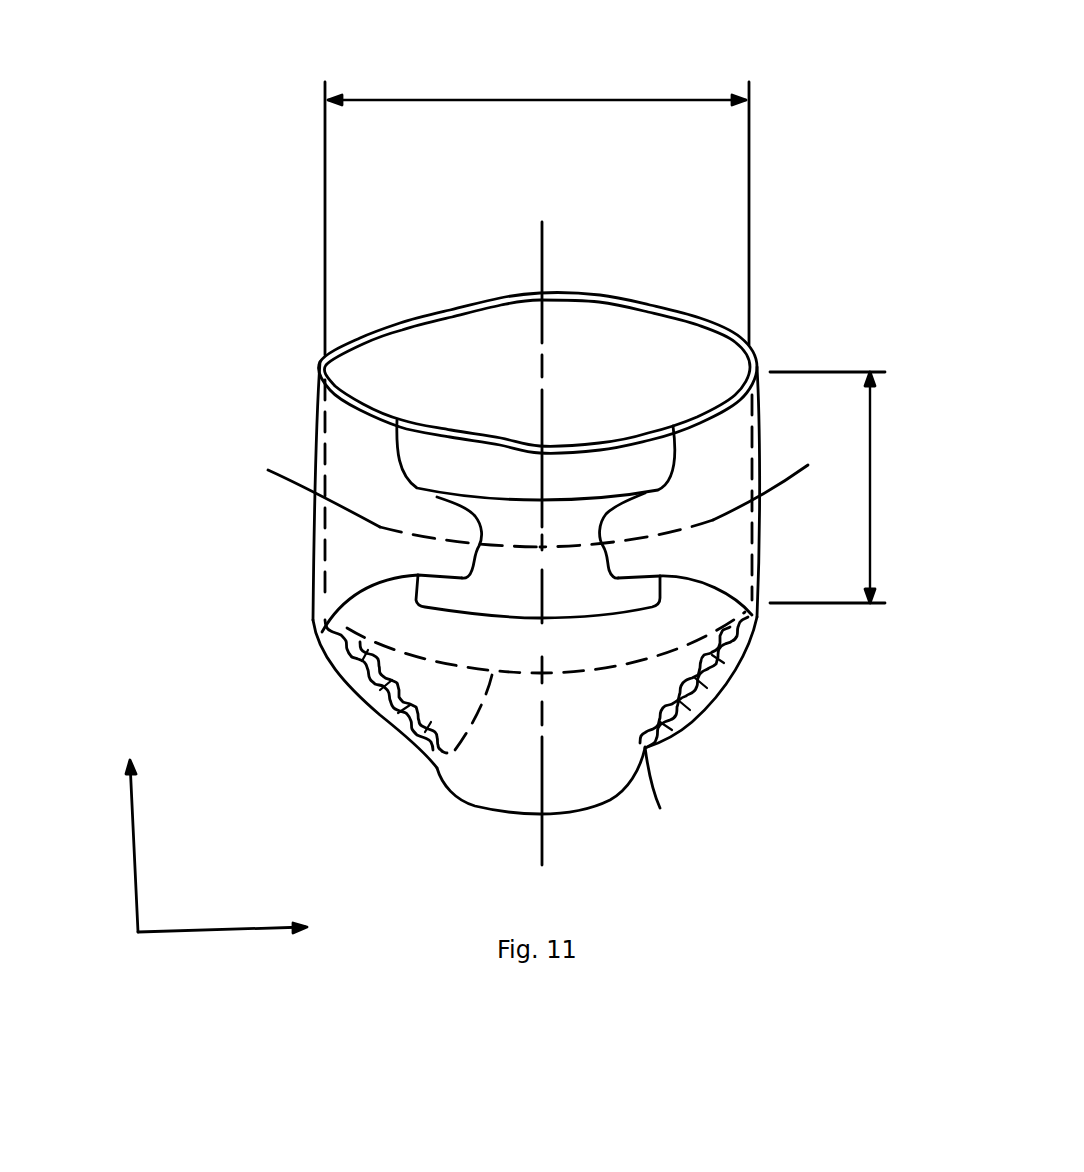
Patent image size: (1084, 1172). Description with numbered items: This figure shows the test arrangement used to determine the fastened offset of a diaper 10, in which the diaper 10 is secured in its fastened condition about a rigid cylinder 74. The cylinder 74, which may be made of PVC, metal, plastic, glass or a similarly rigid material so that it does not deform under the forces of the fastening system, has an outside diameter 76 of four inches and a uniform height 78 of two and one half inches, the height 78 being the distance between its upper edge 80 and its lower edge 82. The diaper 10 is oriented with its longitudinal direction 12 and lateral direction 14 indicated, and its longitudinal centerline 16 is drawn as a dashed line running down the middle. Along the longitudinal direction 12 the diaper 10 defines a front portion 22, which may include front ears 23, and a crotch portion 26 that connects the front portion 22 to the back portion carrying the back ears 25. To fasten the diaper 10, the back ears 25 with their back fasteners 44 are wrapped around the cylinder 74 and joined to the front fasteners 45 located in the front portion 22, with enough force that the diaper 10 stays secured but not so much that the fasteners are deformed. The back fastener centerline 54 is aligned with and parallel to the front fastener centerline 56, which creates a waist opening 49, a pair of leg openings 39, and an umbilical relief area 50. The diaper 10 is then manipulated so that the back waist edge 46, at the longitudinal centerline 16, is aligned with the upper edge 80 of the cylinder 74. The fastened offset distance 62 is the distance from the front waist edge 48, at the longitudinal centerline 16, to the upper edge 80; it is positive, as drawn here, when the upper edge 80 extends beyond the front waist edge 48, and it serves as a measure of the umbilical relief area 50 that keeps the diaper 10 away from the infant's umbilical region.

The diaper 10 is at (320, 737).
The longitudinal direction 12 is at (130, 843).
The lateral direction 14 is at (205, 928).
The longitudinal centerline 16 is at (544, 250).
The front portion 22 is at (660, 808).
The front ears 23 is at (757, 617).
The back ears 25 is at (345, 553).
The crotch portion 26 is at (593, 812).
The leg openings 39 is at (375, 740).
The back fasteners 44 is at (457, 563).
The front fasteners 45 is at (502, 600).
The back waist edge 46 is at (573, 297).
The front waist edge 48 is at (583, 495).
The waist opening 49 is at (683, 357).
The umbilical relief area 50 is at (565, 475).
The back fastener centerline 54 is at (290, 487).
The front fastener centerline 56 is at (278, 470).
The fastened offset distance 62 is at (542, 455).
The cylinder 74 is at (441, 386).
The outside diameter 76 is at (545, 98).
The height 78 is at (878, 487).
The upper edge 80 is at (643, 297).
The lower edge 82 is at (430, 765).